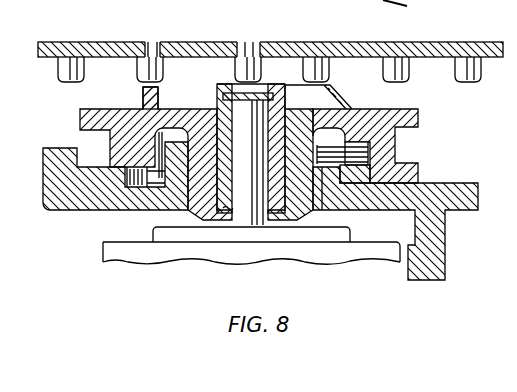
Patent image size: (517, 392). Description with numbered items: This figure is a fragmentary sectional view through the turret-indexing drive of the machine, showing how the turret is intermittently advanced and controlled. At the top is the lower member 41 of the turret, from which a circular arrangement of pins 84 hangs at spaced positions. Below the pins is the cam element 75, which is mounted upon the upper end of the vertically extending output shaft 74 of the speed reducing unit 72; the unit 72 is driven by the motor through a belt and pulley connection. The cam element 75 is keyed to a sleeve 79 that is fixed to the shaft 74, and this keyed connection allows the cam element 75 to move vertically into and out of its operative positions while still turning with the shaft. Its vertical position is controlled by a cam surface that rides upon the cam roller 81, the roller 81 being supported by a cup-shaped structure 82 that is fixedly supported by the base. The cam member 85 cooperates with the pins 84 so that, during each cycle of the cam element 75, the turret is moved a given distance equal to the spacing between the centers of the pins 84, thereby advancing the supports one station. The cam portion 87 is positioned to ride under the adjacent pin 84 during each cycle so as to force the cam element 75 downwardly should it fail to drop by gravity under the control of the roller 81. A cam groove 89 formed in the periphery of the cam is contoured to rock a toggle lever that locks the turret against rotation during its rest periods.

The lower member 41 is at (112, 41).
The pins 84 is at (69, 80).
The cam portion 87 is at (183, 97).
The cam element 75 is at (421, 121).
The cam member 85 is at (370, 146).
The cam groove 89 is at (395, 160).
The cup-shaped structure 82 is at (64, 203).
The cam roller 81 is at (358, 186).
The sleeve 79 is at (281, 228).
The output shaft 74 is at (246, 228).
The speed reducing unit 72 is at (132, 256).